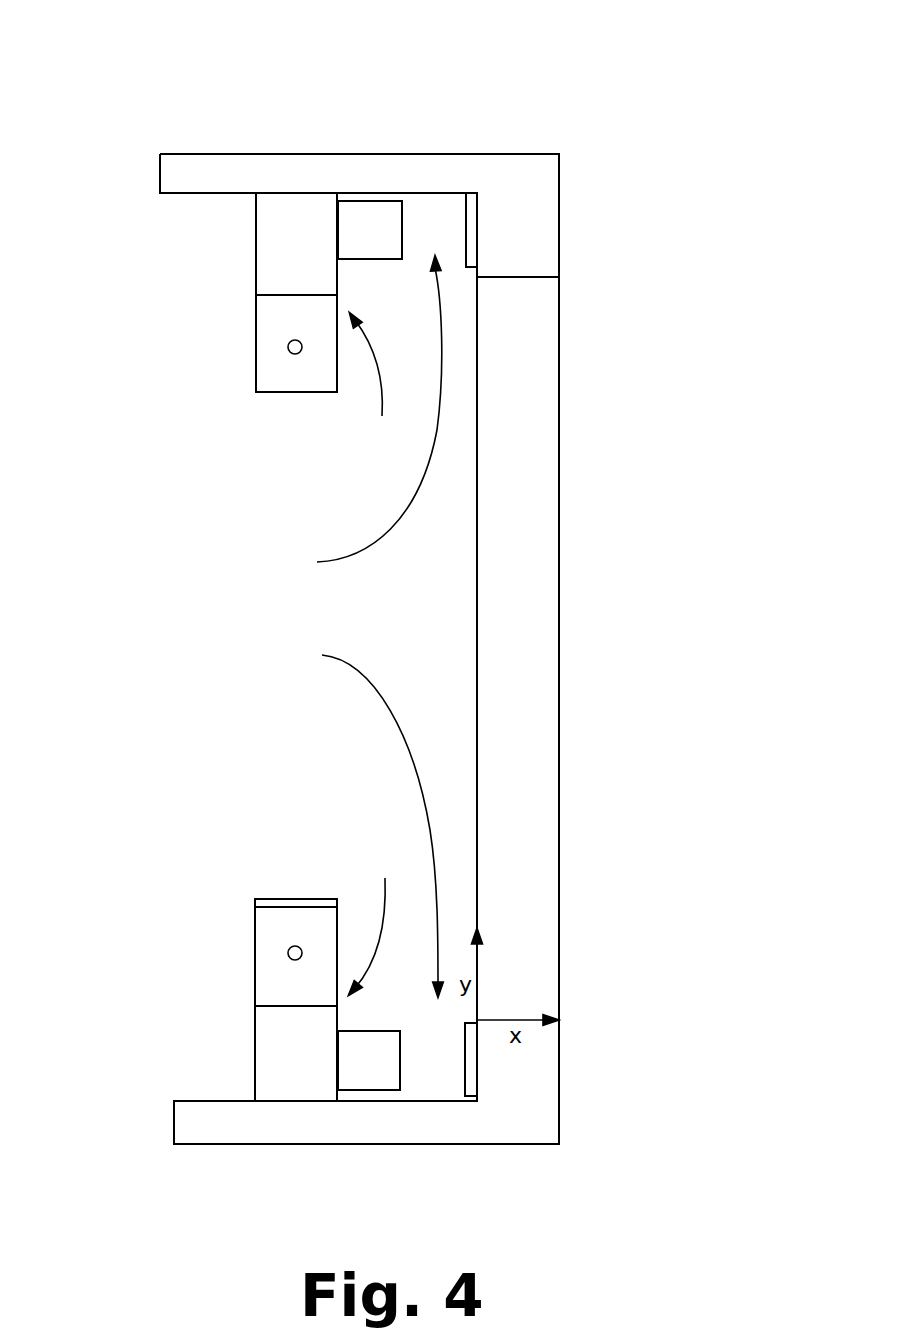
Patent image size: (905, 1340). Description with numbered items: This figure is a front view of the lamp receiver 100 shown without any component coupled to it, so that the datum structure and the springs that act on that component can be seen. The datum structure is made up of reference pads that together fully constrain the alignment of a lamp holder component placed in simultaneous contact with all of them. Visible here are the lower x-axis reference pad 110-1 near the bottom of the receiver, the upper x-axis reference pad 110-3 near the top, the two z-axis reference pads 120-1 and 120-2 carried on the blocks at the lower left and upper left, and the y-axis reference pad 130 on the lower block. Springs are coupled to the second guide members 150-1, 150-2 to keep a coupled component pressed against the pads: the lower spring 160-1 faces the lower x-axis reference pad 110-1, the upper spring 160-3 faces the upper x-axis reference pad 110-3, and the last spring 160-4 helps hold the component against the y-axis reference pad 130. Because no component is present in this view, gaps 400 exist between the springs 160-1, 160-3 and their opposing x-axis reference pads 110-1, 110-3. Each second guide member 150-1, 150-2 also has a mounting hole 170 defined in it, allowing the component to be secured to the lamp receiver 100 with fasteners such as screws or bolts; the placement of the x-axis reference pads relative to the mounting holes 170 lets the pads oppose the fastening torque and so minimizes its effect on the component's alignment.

The lamp receiver 100 is at (152, 66).
The x-axis reference pad 110-1 is at (465, 1060).
The x-axis reference pad 110-3 is at (467, 232).
The z-axis reference pad 120-1 is at (274, 977).
The z-axis reference pad 120-2 is at (268, 318).
The y-axis reference pad 130 is at (292, 1010).
The second guide member 150-1 is at (386, 925).
The second guide member 150-2 is at (383, 381).
The spring 160-1 is at (401, 1060).
The spring 160-3 is at (403, 230).
The spring 160-4 is at (295, 899).
The mounting hole 170 is at (280, 347).
The gap 400 is at (358, 626).